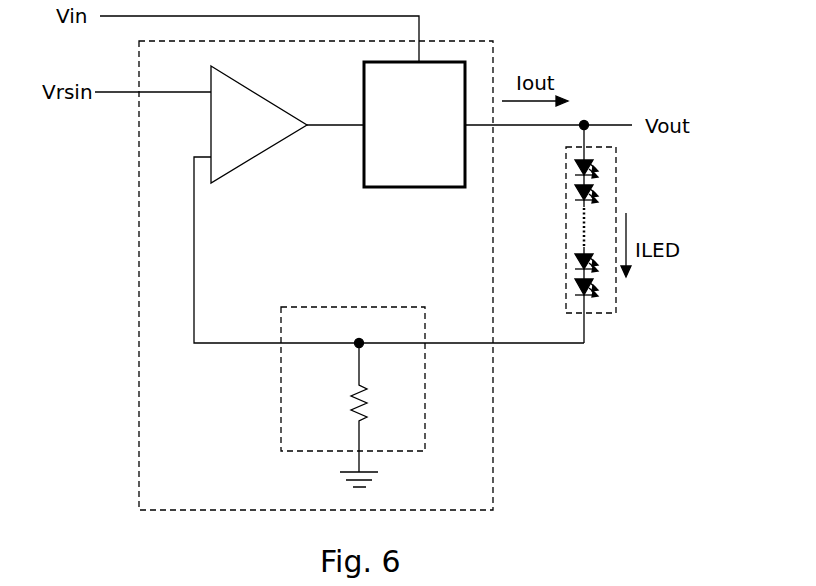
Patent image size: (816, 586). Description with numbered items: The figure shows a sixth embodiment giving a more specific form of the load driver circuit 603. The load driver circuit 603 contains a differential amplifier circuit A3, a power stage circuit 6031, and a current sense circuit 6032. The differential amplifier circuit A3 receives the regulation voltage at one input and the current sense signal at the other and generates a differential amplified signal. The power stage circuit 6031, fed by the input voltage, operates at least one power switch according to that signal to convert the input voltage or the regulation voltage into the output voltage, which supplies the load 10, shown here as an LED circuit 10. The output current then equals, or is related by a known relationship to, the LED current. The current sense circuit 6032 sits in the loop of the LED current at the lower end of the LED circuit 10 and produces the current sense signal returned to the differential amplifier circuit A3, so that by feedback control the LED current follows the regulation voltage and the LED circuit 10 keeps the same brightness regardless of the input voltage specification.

The load driver circuit 603 is at (193, 501).
The power stage circuit 6031 is at (405, 190).
The current sense circuit 6032 is at (344, 442).
The LED circuit 10 is at (616, 186).
The differential amplifier circuit A3 is at (278, 113).